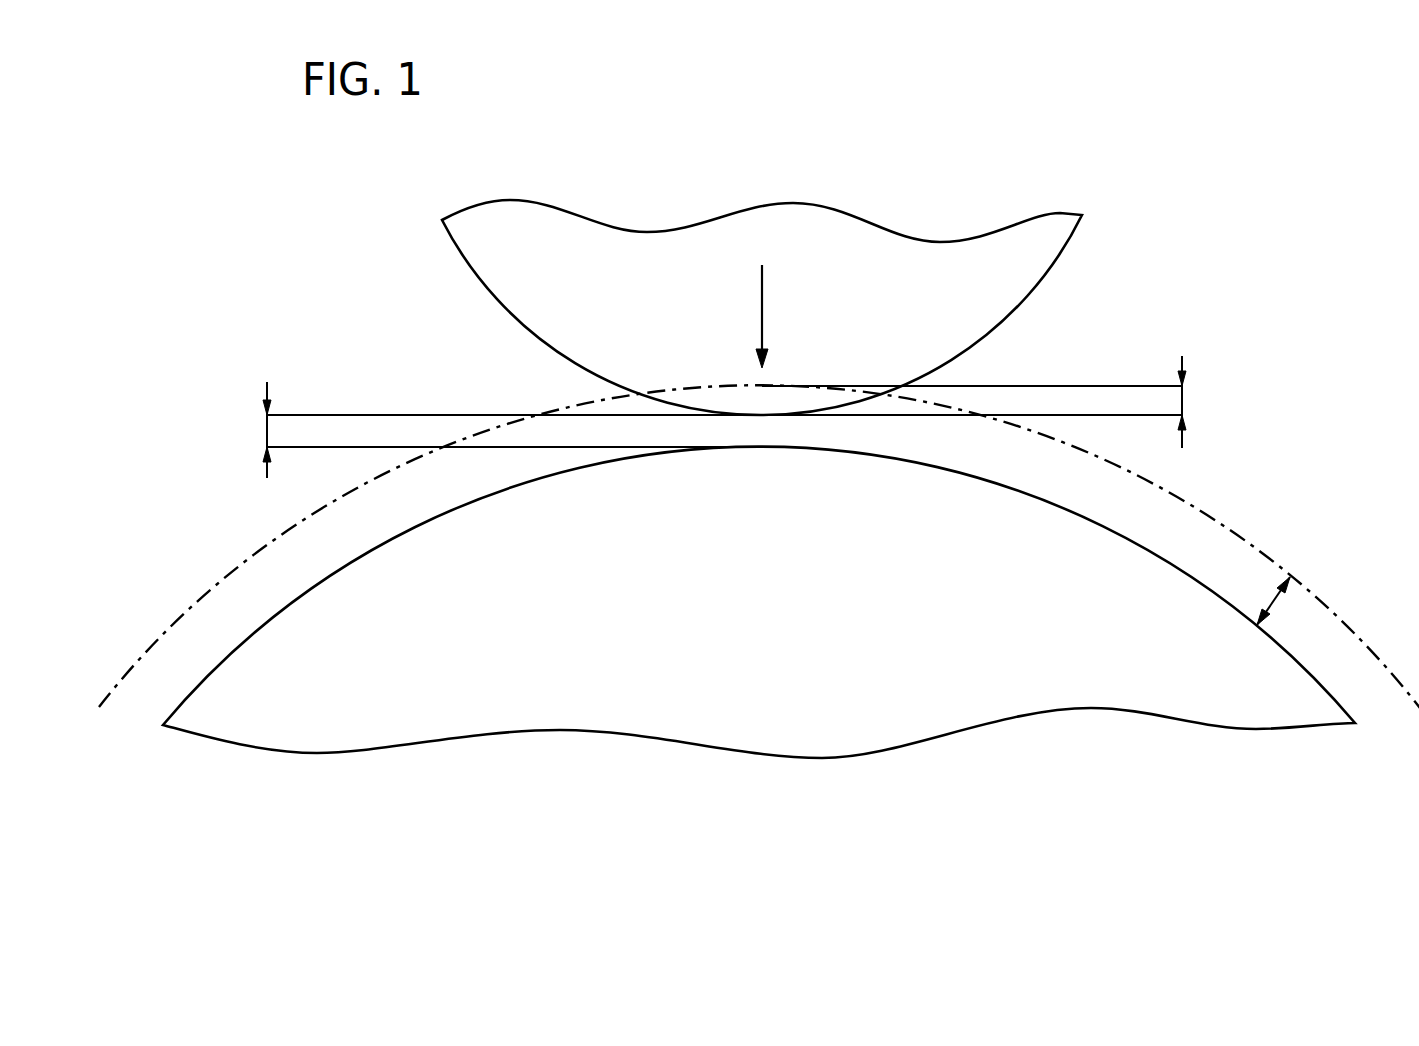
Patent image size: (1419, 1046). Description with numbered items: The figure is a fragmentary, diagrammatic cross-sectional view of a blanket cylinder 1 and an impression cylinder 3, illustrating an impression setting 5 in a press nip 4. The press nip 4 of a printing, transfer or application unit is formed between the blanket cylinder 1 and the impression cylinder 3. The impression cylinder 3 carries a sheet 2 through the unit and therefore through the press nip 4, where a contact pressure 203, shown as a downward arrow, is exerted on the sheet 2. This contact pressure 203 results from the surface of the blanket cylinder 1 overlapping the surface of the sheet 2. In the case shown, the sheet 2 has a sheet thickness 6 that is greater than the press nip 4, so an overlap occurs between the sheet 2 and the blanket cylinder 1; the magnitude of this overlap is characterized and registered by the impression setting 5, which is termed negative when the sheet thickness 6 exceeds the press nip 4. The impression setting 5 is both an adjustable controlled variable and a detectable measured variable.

The blanket cylinder 1 is at (697, 253).
The sheet 2 is at (277, 538).
The impression cylinder 3 is at (600, 705).
The press nip 4 is at (267, 432).
The impression setting 5 is at (1182, 404).
The sheet thickness 6 is at (1272, 602).
The contact pressure 203 is at (763, 315).